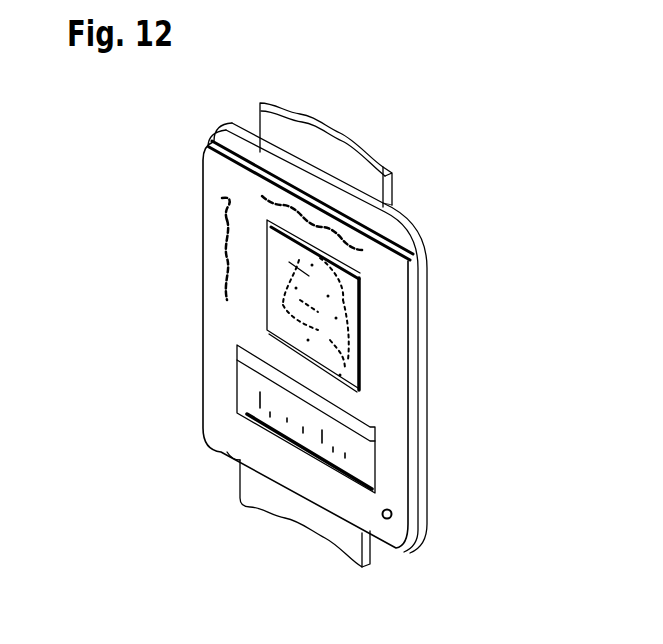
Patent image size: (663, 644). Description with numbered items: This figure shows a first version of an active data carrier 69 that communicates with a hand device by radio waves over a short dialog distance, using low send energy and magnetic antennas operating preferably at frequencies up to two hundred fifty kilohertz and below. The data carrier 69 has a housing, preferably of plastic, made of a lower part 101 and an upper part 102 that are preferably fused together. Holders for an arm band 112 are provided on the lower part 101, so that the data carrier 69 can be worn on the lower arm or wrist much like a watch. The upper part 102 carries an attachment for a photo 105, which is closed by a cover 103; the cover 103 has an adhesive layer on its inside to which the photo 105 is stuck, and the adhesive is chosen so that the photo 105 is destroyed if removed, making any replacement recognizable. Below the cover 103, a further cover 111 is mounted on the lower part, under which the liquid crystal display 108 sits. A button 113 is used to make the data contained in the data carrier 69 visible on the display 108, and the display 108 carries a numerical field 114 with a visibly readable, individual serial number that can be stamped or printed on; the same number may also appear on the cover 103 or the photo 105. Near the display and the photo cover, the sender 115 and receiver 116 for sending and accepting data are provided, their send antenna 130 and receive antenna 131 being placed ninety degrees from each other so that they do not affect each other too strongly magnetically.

The data carrier 69 is at (190, 378).
The lower part 101 is at (418, 378).
The upper part 102 is at (213, 160).
The cover 103 is at (358, 343).
The photo 105 is at (302, 300).
The liquid crystal display 108 is at (372, 459).
The cover 111 is at (262, 424).
The arm band 112 is at (273, 493).
The button 113 is at (393, 514).
The numerical field 114 is at (358, 428).
The sender 115 is at (376, 247).
The receiver 116 is at (220, 262).
The send antenna 130 is at (312, 209).
The receive antenna 131 is at (220, 227).